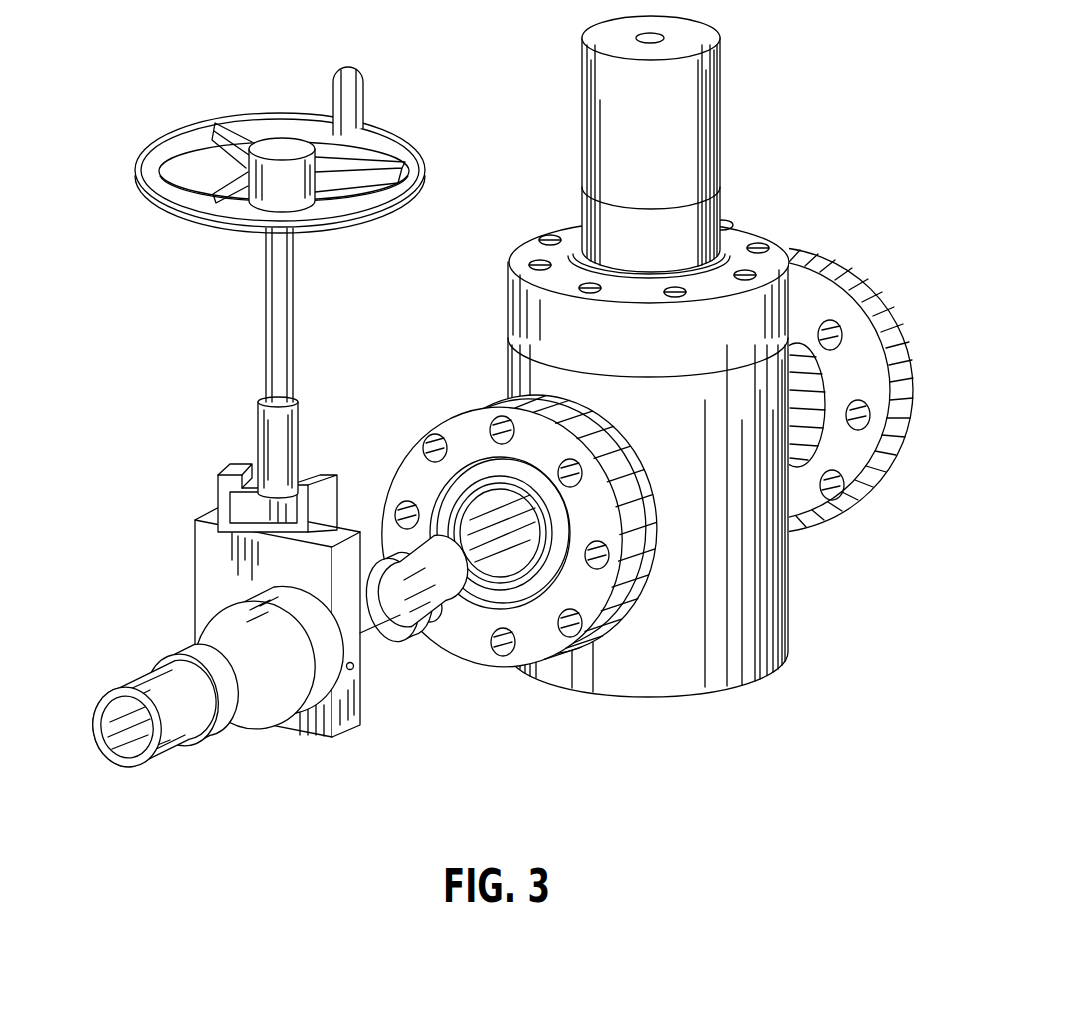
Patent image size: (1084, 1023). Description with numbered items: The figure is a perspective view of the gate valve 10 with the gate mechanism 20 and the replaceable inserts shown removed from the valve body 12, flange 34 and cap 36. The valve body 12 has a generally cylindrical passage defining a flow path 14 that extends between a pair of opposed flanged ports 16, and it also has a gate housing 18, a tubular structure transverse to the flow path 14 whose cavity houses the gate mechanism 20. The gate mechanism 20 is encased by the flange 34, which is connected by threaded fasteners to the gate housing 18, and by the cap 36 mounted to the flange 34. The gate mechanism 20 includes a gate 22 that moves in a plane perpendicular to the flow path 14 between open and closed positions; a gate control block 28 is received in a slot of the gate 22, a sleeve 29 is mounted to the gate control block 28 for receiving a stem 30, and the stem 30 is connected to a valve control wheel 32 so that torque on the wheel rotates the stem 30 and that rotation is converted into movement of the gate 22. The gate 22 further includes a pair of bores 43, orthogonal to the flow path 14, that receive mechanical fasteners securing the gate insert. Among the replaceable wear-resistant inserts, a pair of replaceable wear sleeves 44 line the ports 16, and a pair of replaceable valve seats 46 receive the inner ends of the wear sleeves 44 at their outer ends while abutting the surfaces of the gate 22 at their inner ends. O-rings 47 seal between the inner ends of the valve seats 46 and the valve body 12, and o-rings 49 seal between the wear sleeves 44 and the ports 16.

The gate valve 10 is at (501, 494).
The valve body 12 is at (654, 400).
The flow path 14 is at (503, 535).
The flanged ports 16 is at (450, 430).
The gate housing 18 is at (737, 608).
The gate mechanism 20 is at (241, 402).
The gate 22 is at (207, 553).
The gate control block 28 is at (240, 504).
The sleeve 29 is at (273, 433).
The stem 30 is at (277, 283).
The valve control wheel 32 is at (176, 136).
The flange 34 is at (530, 315).
The cap 36 is at (710, 100).
The bores 43 is at (350, 670).
The replaceable wear sleeves 44 is at (158, 757).
The replaceable valve seats 46 is at (270, 715).
The o-rings 47 is at (247, 735).
The o-rings 49 is at (163, 763).